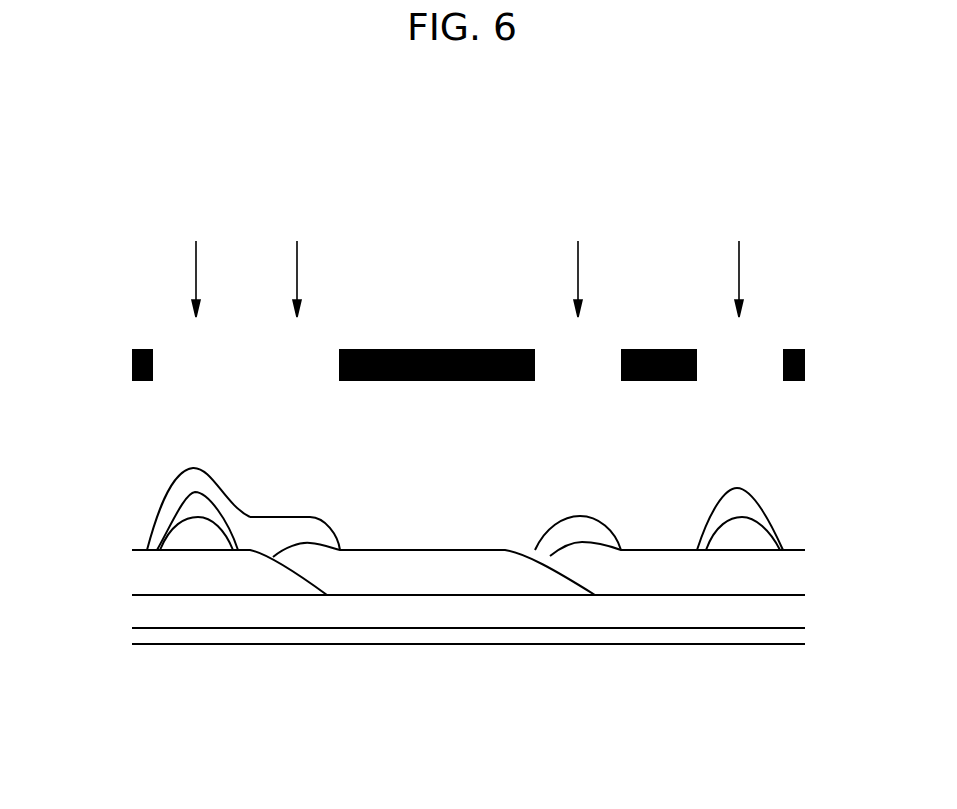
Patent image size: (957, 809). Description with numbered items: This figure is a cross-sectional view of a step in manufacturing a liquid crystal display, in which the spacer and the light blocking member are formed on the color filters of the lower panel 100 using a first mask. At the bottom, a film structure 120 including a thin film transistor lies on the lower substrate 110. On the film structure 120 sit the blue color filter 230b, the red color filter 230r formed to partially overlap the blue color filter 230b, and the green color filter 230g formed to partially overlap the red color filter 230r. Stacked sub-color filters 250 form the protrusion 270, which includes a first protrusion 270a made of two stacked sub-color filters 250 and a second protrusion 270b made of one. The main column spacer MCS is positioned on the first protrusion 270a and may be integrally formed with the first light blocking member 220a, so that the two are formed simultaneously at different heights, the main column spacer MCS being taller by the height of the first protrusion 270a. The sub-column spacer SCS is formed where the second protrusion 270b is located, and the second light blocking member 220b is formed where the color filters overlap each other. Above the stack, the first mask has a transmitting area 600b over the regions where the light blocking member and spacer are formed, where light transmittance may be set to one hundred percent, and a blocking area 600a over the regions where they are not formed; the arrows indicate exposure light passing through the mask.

The lower panel 100 is at (810, 475).
The lower substrate 110 is at (142, 638).
The film structure 120 is at (142, 612).
The blue color filter 230b is at (142, 575).
The red color filter 230r is at (427, 557).
The green color filter 230g is at (655, 563).
The first light blocking member 220a is at (303, 525).
The second light blocking member 220b is at (578, 520).
The sub-color filter 250 is at (213, 533).
The first protrusion 270a is at (208, 493).
The second protrusion 270b is at (762, 523).
The protrusion 270 is at (472, 760).
The main column spacer MCS is at (194, 477).
The sub-column spacer SCS is at (735, 493).
The blocking area 600a is at (141, 349).
The transmitting area 600b is at (323, 349).